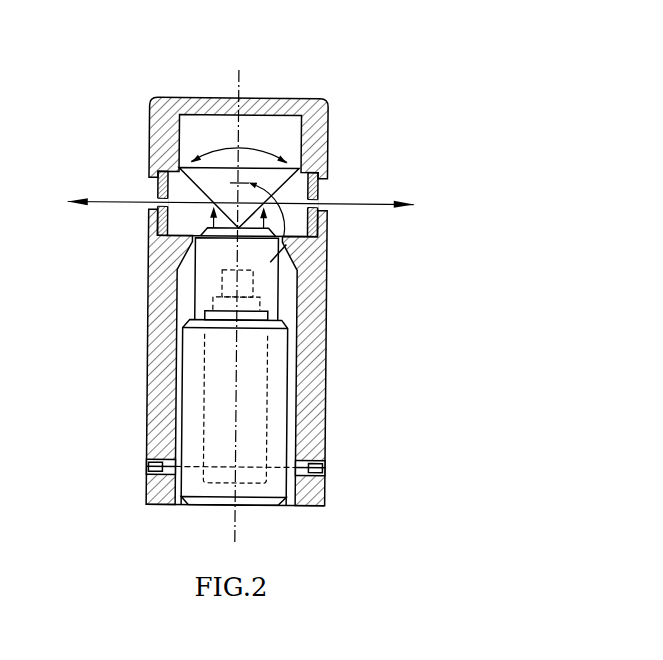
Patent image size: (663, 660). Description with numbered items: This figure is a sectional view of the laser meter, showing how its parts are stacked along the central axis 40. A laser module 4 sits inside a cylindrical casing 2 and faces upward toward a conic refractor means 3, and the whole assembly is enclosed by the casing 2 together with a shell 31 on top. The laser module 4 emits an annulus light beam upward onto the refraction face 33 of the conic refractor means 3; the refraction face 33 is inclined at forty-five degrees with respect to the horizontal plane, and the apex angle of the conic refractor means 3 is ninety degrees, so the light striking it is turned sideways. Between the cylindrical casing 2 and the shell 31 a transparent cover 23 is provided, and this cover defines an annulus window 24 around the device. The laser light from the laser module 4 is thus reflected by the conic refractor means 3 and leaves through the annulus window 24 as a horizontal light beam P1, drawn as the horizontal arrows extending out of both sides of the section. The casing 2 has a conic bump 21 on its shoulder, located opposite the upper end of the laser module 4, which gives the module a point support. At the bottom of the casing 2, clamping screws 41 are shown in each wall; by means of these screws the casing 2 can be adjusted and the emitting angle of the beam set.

The cylindrical casing 2 is at (325, 332).
The conic refractor means 3 is at (236, 133).
The laser module 4 is at (258, 417).
The conic bump 21 is at (160, 277).
The transparent cover 23 is at (153, 220).
The annulus window 24 is at (155, 208).
The shell 31 is at (177, 102).
The refraction face 33 is at (178, 171).
The central axis 40 is at (240, 82).
The clamping screws 41 is at (150, 460).
The horizontal light beam P1 is at (357, 200).